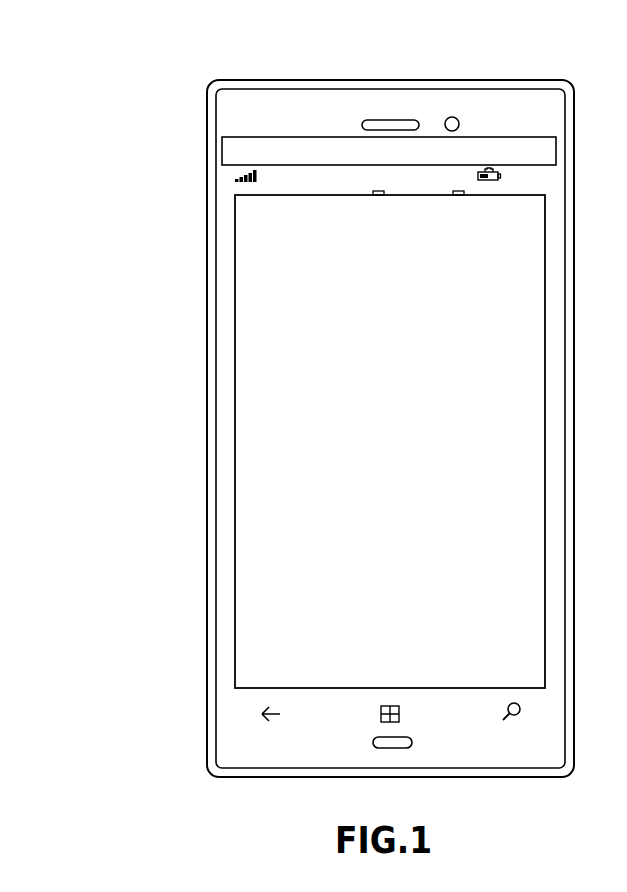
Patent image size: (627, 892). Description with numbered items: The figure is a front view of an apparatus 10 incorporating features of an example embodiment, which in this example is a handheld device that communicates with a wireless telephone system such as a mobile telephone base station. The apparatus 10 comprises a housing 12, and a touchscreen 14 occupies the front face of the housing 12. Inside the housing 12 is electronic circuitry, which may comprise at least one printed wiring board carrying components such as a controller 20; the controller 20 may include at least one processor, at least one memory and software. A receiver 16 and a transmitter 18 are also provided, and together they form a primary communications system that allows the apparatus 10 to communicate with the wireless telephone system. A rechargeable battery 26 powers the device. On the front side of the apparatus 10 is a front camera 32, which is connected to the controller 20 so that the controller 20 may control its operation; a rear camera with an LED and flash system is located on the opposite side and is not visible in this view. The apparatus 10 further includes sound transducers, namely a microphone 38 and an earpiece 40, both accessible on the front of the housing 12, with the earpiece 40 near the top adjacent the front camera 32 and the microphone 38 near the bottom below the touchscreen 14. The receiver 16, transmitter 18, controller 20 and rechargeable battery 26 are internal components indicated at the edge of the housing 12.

The apparatus 10 is at (166, 144).
The housing 12 is at (207, 368).
The touchscreen 14 is at (268, 492).
The receiver 16 is at (207, 540).
The transmitter 18 is at (207, 572).
The controller 20 is at (207, 605).
The rechargeable battery 26 is at (207, 665).
The front camera 32 is at (457, 120).
The microphone 38 is at (398, 746).
The earpiece 40 is at (382, 120).